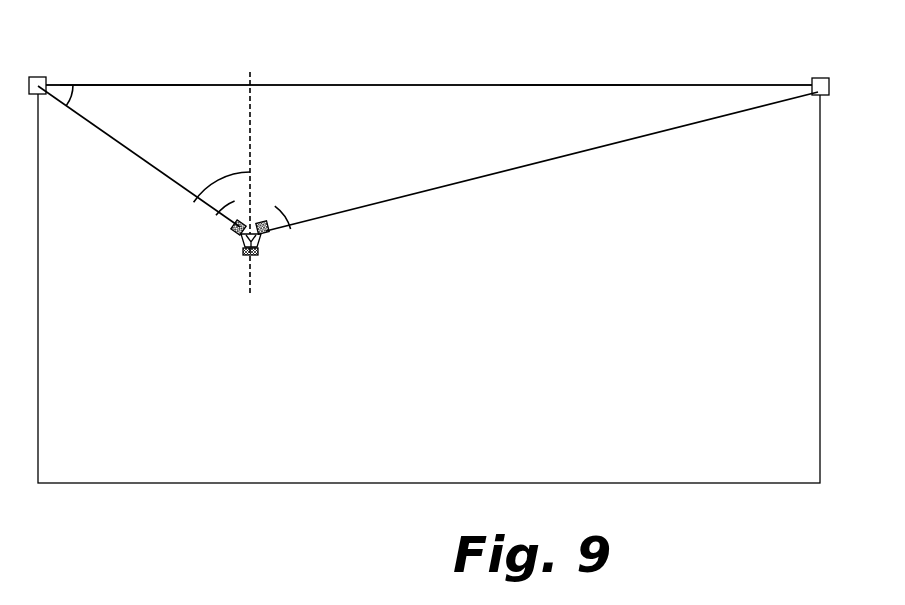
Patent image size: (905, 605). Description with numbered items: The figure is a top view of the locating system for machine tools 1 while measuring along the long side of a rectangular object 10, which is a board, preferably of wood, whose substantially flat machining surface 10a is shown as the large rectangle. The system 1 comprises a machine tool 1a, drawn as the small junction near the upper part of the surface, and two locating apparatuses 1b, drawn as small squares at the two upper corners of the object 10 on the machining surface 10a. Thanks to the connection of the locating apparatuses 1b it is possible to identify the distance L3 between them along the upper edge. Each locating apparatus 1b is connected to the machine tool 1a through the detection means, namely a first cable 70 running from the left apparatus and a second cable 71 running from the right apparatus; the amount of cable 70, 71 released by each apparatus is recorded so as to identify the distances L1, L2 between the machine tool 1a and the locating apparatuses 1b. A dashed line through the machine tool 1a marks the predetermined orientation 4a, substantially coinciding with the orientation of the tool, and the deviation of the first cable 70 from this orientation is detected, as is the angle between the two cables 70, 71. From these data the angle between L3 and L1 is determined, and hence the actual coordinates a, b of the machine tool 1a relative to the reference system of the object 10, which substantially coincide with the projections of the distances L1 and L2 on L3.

The locating system for machine tools 1 is at (447, 345).
The machine tool 1a is at (257, 251).
The locating apparatus 1b is at (45, 77).
The predetermined orientation 4a is at (251, 122).
The object 10 is at (429, 284).
The machining surface 10a is at (653, 314).
The first cable 70 is at (202, 200).
The second cable 71 is at (430, 189).
The distance between the machine tool and the locating apparatus L1 is at (140, 171).
The distance between the machine tool and the locating apparatus L2 is at (525, 182).
The distance between the locating apparatuses L3 is at (429, 59).
The coordinate of the machine tool a is at (134, 85).
The coordinate of the machine tool b is at (534, 85).